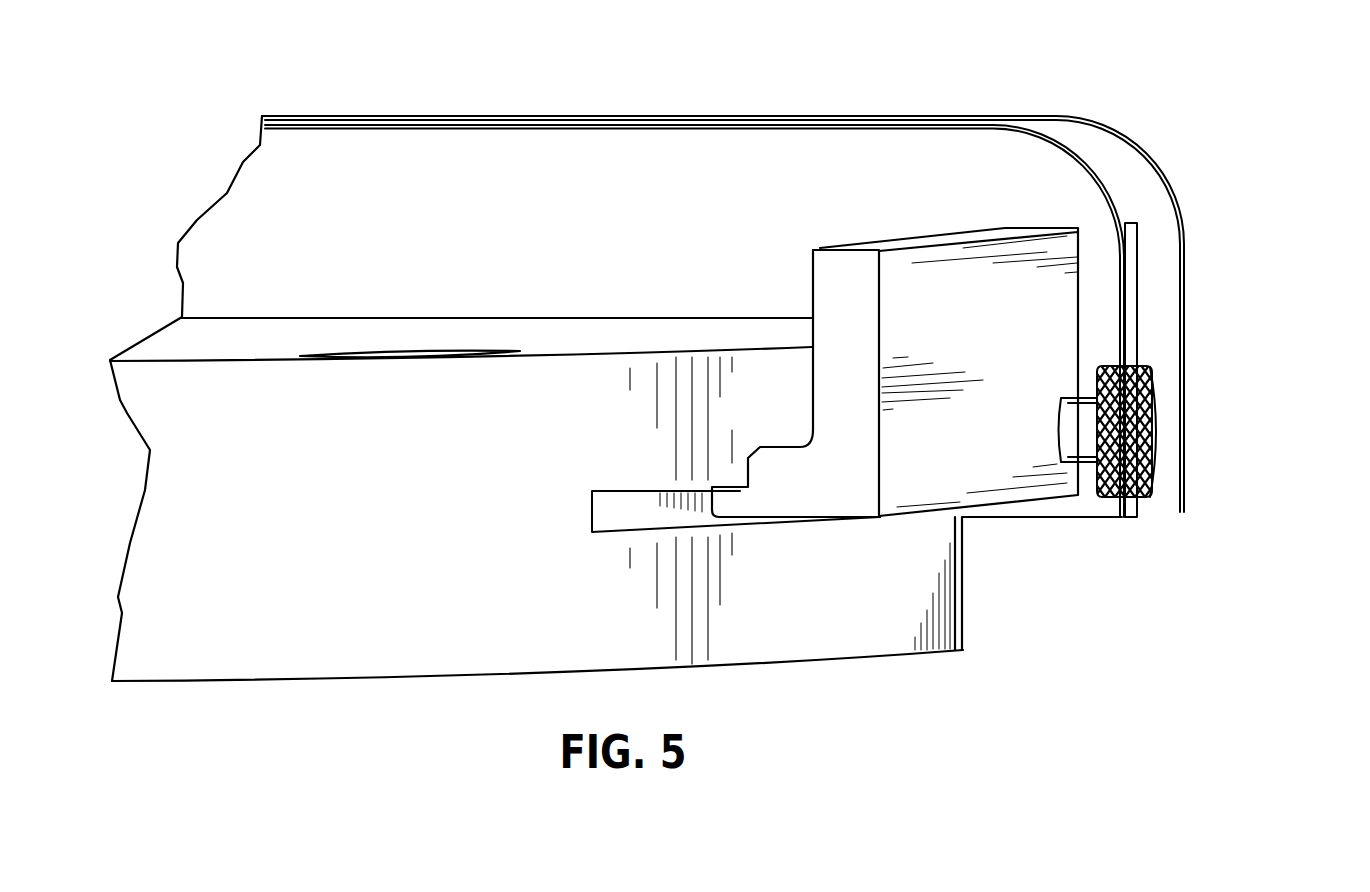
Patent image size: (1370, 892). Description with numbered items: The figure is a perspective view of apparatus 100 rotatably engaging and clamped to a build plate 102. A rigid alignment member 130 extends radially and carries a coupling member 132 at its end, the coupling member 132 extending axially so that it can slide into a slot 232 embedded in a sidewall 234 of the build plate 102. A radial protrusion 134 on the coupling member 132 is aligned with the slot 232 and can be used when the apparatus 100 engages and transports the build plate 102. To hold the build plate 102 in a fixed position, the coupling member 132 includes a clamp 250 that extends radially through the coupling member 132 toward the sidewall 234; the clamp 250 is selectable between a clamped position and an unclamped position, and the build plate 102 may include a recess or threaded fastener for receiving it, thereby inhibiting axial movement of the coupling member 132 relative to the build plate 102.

The apparatus 100 is at (1208, 268).
The build plate 102 is at (772, 603).
The alignment member 130 is at (1098, 215).
The coupling member 132 is at (968, 473).
The radial protrusion 134 is at (777, 487).
The slot 232 is at (637, 513).
The sidewall 234 is at (752, 383).
The clamp 250 is at (1153, 457).